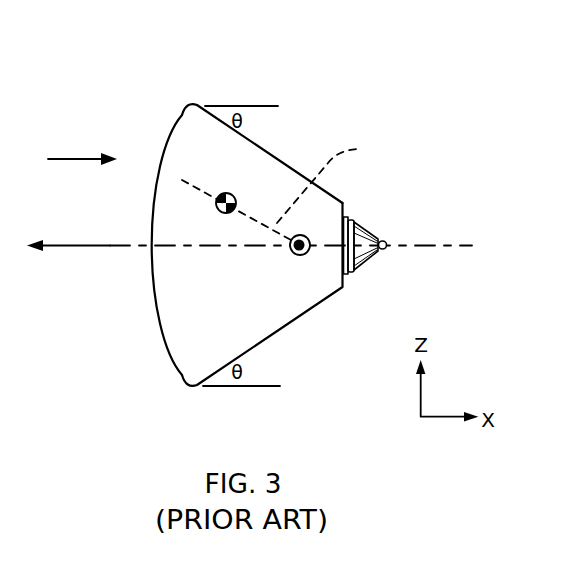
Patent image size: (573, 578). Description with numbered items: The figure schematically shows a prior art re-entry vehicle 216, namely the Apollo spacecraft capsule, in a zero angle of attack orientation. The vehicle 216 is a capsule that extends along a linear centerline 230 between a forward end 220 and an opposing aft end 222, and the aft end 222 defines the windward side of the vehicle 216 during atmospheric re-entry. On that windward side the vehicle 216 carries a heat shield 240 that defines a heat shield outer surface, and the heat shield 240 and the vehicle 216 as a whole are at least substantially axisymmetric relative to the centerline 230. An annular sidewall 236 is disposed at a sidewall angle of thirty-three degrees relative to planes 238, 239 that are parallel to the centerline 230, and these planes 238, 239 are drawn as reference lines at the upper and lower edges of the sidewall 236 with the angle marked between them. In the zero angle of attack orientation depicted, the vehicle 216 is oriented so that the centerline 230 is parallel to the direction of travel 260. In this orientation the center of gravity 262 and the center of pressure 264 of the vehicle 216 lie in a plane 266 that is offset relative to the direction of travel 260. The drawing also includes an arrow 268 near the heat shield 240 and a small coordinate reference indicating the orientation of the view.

The re-entry vehicle 216 is at (154, 62).
The forward end 220 is at (385, 251).
The aft end 222 is at (167, 357).
The centerline 230 is at (458, 246).
The annular sidewall 236 is at (258, 144).
The plane parallel to the centerline 238 is at (272, 106).
The plane parallel to the centerline 239 is at (263, 386).
The heat shield 240 is at (195, 242).
The direction of travel 260 is at (53, 245).
The center of gravity 262 is at (235, 198).
The center of pressure 264 is at (307, 238).
The plane 266 is at (336, 182).
The incoming signal direction 268 is at (78, 158).